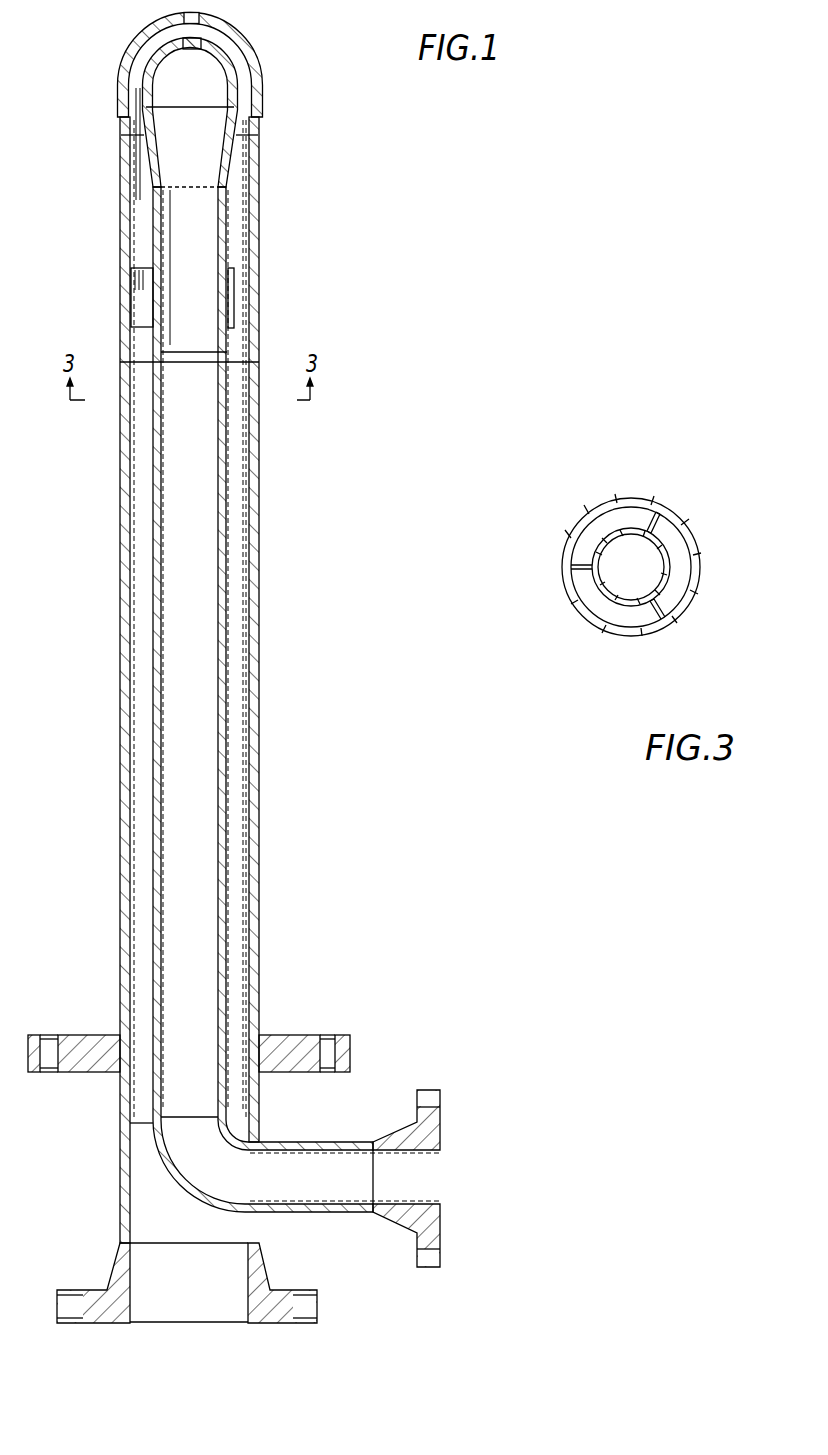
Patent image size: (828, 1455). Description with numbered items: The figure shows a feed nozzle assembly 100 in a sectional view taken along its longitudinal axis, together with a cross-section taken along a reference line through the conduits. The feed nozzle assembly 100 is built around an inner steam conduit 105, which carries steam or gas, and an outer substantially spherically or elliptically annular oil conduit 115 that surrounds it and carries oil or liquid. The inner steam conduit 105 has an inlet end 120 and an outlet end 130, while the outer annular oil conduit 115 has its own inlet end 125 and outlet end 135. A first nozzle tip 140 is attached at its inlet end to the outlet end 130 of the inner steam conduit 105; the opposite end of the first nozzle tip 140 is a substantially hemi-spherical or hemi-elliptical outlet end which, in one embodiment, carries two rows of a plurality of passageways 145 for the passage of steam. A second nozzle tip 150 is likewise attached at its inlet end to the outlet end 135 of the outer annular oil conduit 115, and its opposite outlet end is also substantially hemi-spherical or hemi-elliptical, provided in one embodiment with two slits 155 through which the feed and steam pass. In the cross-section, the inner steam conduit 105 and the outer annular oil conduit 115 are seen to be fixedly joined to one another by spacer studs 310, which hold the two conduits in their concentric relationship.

In FIG. 1, the feed nozzle assembly 100 is at (410, 265).
In FIG. 1, the inner steam conduit 105 is at (157, 613).
In FIG. 3, the inner steam conduit 105 is at (673, 577).
In FIG. 1, the outer annular oil conduit 115 is at (130, 548).
In FIG. 3, the outer annular oil conduit 115 is at (697, 537).
In FIG. 1, the inlet end 120 is at (430, 1180).
In FIG. 1, the inlet end 125 is at (197, 1312).
In FIG. 1, the outlet end 130 is at (207, 212).
In FIG. 1, the outlet end 135 is at (258, 262).
In FIG. 1, the first nozzle tip 140 is at (141, 90).
In FIG. 1, the passageways 145 is at (170, 31).
In FIG. 1, the second nozzle tip 150 is at (264, 98).
In FIG. 1, the slits 155 is at (200, 9).
In FIG. 1, the spacer studs 310 is at (139, 297).
In FIG. 3, the spacer studs 310 is at (648, 522).